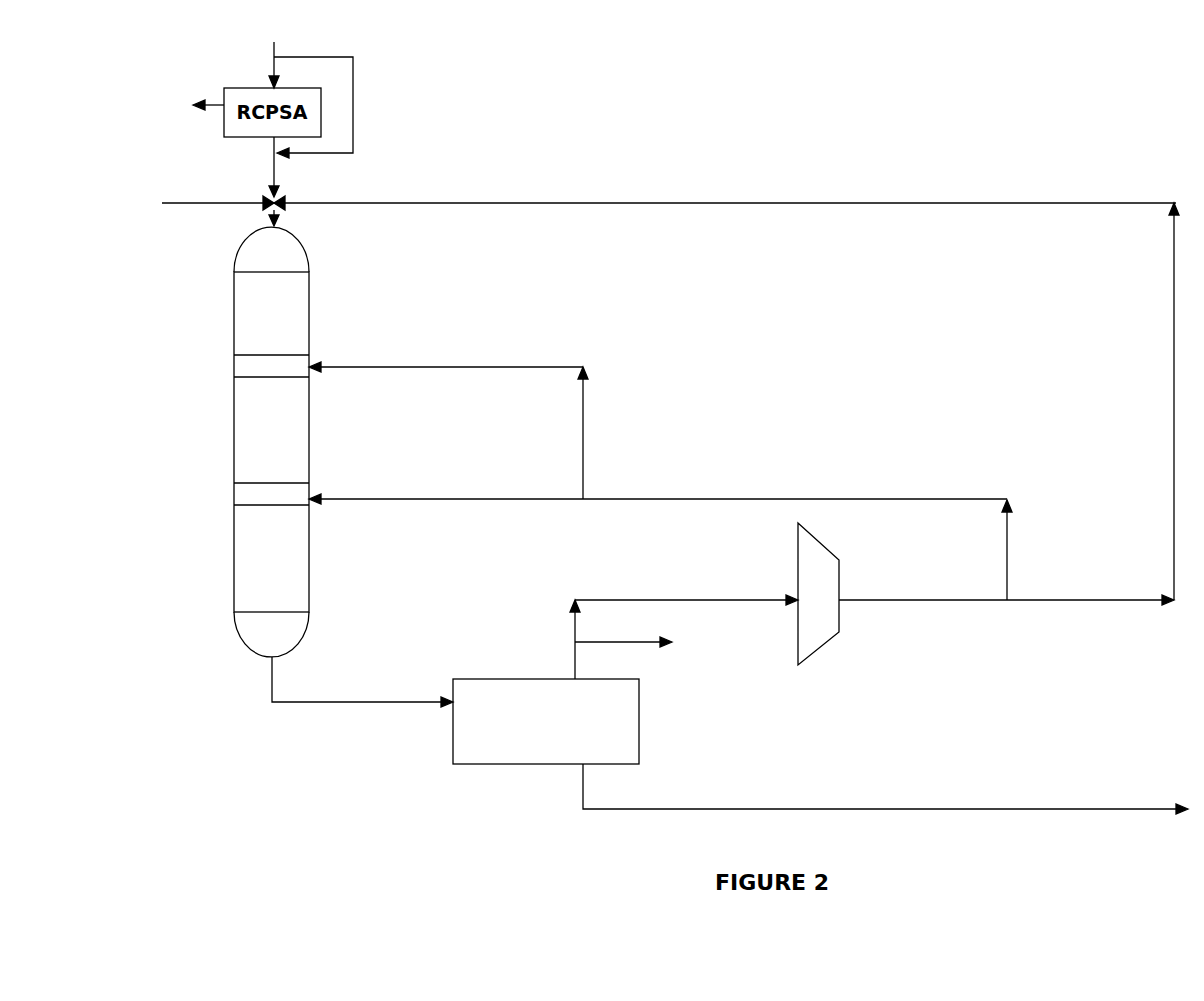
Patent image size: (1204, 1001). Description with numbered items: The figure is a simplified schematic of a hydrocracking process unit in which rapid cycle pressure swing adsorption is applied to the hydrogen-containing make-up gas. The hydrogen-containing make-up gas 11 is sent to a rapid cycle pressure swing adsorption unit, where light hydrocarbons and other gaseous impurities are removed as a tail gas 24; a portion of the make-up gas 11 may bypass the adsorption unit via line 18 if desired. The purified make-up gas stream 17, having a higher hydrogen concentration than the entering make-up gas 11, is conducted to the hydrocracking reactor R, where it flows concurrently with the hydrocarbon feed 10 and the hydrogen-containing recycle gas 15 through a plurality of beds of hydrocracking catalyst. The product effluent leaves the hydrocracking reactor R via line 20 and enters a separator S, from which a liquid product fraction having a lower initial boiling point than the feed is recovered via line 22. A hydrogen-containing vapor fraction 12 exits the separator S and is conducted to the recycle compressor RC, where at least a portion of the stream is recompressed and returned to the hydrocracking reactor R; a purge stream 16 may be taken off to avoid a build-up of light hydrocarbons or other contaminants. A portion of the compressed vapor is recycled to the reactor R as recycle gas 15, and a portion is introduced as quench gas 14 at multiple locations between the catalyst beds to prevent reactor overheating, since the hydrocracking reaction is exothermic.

The hydrocarbon feed 10 is at (222, 217).
The hydrogen-containing make-up gas 11 is at (283, 45).
The hydrogen-containing vapor fraction 12 is at (553, 650).
The quench gas 14 is at (406, 347).
The hydrogen-containing recycle gas 15 is at (1152, 287).
The purge stream 16 is at (647, 657).
The purified make-up gas stream 17 is at (287, 185).
The bypass line 18 is at (367, 105).
The product effluent line 20 is at (353, 713).
The liquid product line 22 is at (1045, 827).
The tail gas 24 is at (210, 88).
The hydrocracking reactor R is at (222, 405).
The separator S is at (452, 666).
The recycle compressor RC is at (832, 652).